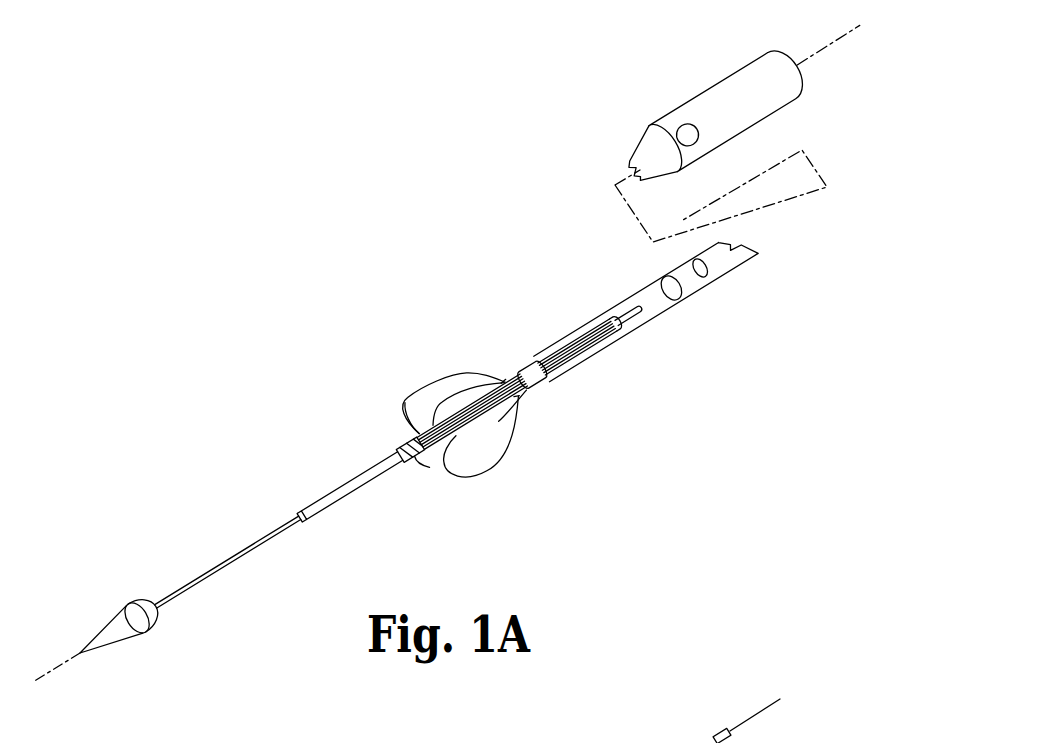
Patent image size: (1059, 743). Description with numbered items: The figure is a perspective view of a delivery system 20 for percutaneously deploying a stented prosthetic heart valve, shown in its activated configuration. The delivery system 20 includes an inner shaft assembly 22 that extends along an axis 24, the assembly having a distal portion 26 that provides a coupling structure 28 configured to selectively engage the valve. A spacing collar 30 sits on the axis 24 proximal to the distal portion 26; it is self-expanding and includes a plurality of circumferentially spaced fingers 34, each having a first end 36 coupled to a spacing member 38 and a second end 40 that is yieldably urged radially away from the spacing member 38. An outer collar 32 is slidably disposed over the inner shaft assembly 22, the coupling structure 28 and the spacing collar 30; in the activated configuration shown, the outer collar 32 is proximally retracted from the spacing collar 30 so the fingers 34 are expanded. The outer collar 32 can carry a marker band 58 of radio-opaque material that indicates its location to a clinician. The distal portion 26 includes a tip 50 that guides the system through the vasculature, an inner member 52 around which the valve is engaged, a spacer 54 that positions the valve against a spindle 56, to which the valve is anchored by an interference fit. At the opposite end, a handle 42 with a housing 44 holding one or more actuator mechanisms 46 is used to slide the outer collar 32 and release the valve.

The delivery system 20 is at (430, 289).
The inner shaft assembly 22 is at (541, 300).
The axis 24 is at (54, 672).
The distal portion 26 is at (247, 593).
The coupling structure 28 is at (290, 494).
The spacing collar 30 is at (531, 444).
The outer collar 32 is at (662, 333).
The fingers 34 is at (422, 388).
The first end 36 is at (505, 379).
The spacing member 38 is at (500, 411).
The second end 40 is at (404, 405).
The handle 42 is at (691, 73).
The housing 44 is at (657, 116).
The actuator mechanism 46 is at (700, 135).
The tip 50 is at (116, 647).
The inner member 52 is at (275, 538).
The spacer 54 is at (352, 492).
The spindle 56 is at (400, 446).
The marker band 58 is at (548, 384).